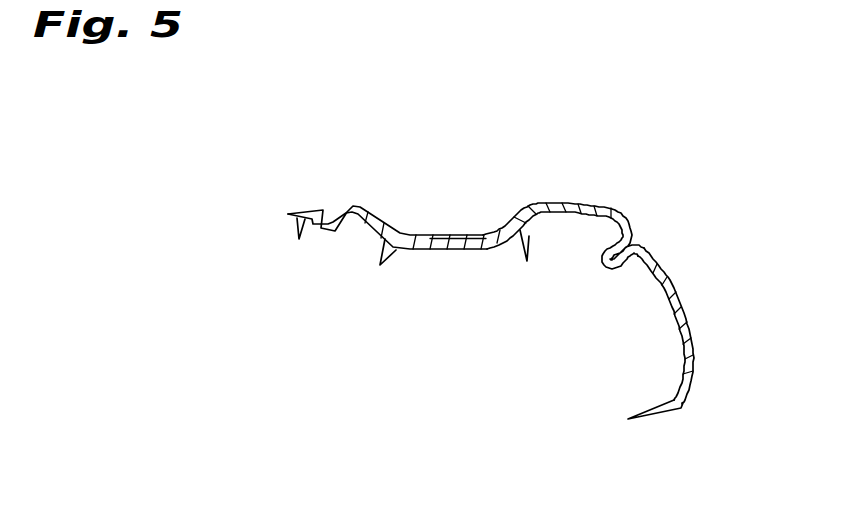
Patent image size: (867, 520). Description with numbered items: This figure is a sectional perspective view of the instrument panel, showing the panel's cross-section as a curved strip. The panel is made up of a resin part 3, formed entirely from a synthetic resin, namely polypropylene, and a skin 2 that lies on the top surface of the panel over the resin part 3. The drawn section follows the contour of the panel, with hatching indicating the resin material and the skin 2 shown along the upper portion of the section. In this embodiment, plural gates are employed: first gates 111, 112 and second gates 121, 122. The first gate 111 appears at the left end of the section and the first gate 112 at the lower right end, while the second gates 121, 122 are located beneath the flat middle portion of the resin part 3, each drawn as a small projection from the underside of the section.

The skin 2 is at (551, 204).
The resin part 3 is at (455, 250).
The first gate 111 is at (295, 227).
The first gate 112 is at (643, 417).
The second gate 121 is at (398, 258).
The second gate 122 is at (537, 240).